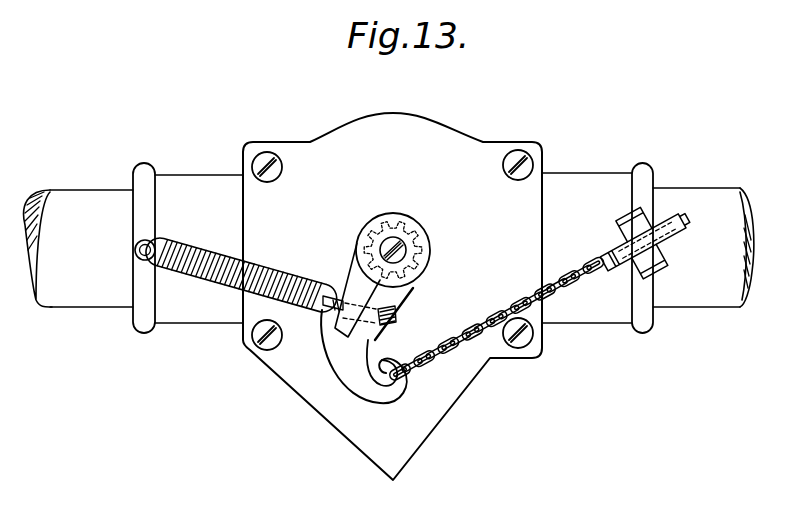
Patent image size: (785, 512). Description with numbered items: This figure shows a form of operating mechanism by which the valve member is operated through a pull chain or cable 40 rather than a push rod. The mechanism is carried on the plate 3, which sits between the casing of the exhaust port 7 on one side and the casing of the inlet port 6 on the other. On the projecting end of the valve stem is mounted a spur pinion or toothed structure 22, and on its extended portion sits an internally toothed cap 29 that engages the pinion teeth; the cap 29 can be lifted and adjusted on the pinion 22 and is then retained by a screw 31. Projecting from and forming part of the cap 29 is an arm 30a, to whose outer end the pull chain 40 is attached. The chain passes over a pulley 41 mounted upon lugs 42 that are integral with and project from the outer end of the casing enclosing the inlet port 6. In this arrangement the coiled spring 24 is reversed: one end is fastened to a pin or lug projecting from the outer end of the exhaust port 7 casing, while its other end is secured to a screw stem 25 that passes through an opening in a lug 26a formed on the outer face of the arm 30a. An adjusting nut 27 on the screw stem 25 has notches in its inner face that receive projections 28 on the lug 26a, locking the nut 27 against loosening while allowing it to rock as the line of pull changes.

The plate 3 is at (392, 296).
The inlet port 6 is at (648, 248).
The exhaust port 7 is at (133, 248).
The spur pinion 22 is at (399, 221).
The coiled spring 24 is at (258, 270).
The screw stem 25 is at (323, 312).
The lug 26a is at (366, 287).
The adjusting nut 27 is at (384, 327).
The projections 28 is at (397, 315).
The cap 29 is at (360, 233).
The screw 31 is at (405, 252).
The arm 30a is at (364, 356).
The pull chain 40 is at (436, 358).
The pulley 41 is at (617, 274).
The lugs 42 is at (652, 222).